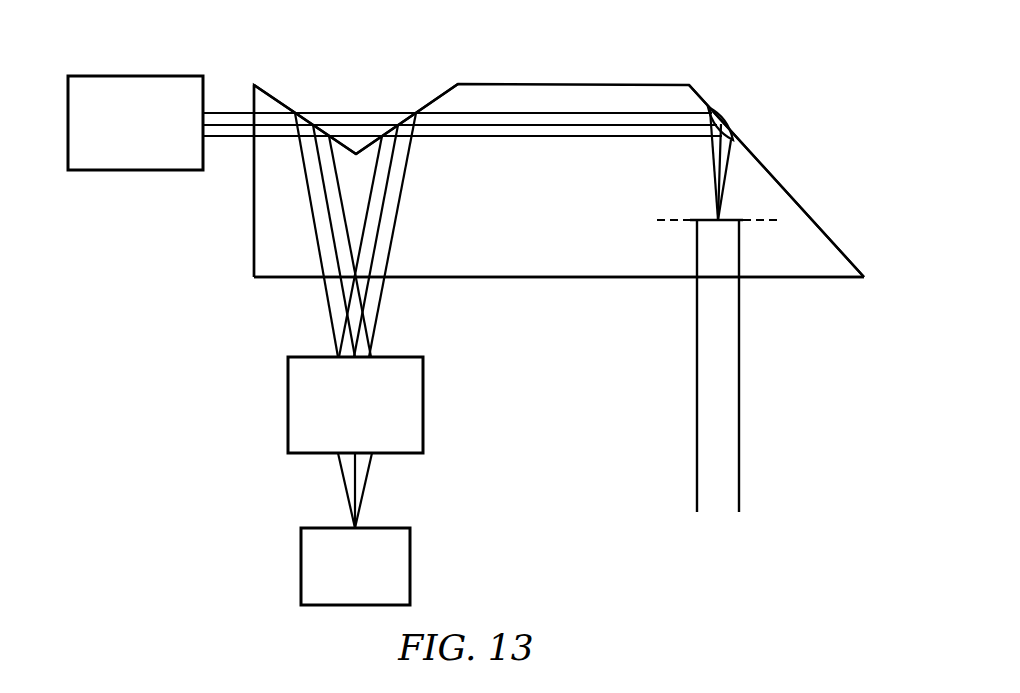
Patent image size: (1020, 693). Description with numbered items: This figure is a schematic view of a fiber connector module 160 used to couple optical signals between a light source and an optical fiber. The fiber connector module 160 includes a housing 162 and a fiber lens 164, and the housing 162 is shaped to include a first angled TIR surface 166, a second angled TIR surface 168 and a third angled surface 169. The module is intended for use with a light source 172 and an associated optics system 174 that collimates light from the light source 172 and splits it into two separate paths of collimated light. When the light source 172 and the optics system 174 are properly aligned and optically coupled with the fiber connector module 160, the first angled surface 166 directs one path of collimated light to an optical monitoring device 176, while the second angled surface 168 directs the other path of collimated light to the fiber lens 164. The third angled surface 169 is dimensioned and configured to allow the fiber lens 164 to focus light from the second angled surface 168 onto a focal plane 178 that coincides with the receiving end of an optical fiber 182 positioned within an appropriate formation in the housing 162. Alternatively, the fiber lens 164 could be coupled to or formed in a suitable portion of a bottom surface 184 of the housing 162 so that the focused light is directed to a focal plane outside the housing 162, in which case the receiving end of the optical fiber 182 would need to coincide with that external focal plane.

The fiber connector module 160 is at (721, 59).
The housing 162 is at (515, 265).
The fiber lens 164 is at (727, 112).
The first angled TIR surface 166 is at (302, 118).
The second angled TIR surface 168 is at (433, 103).
The third angled surface 169 is at (768, 172).
The light source 172 is at (355, 566).
The optics system 174 is at (355, 405).
The optical monitoring device 176 is at (135, 123).
The focal plane 178 is at (677, 221).
The optical fiber 182 is at (710, 380).
The bottom surface 184 is at (652, 277).